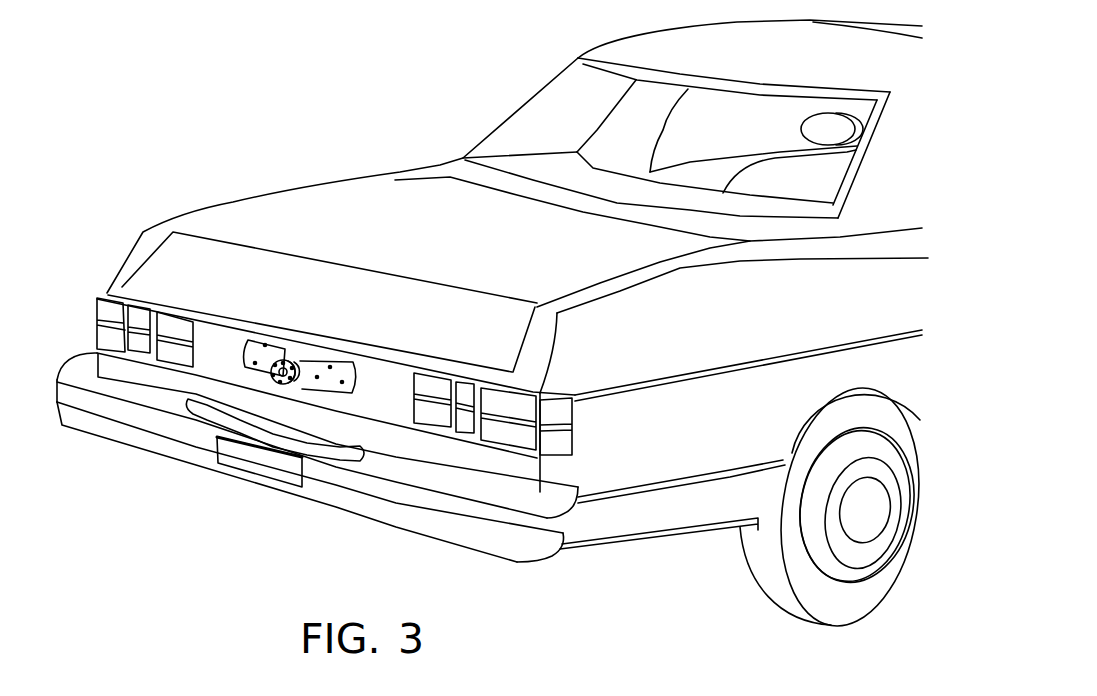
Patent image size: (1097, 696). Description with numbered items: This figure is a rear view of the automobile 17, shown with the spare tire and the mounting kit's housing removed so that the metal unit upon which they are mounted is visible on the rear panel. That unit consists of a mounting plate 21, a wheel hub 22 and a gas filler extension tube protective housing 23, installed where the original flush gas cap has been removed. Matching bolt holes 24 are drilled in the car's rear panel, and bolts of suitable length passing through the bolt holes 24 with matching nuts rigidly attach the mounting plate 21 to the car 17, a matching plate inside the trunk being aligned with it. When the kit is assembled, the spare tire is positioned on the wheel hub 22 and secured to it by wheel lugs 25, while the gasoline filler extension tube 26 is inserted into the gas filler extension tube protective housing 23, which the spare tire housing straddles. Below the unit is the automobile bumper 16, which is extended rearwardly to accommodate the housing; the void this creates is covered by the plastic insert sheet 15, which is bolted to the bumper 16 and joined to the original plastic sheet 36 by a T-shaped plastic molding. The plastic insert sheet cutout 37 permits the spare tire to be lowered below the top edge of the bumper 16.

The plastic insert sheet 15 is at (92, 377).
The automobile bumper 16 is at (83, 412).
The automobile 17 is at (526, 238).
The mounting plate 21 is at (331, 383).
The wheel hub 22 is at (273, 357).
The gas filler extension tube protective housing 23 is at (301, 362).
The bolt holes 24 is at (254, 364).
The wheel lugs 25 is at (286, 359).
The gasoline filler extension tube 26 is at (281, 380).
The original plastic sheet 36 is at (95, 352).
The plastic insert sheet cutout 37 is at (197, 413).